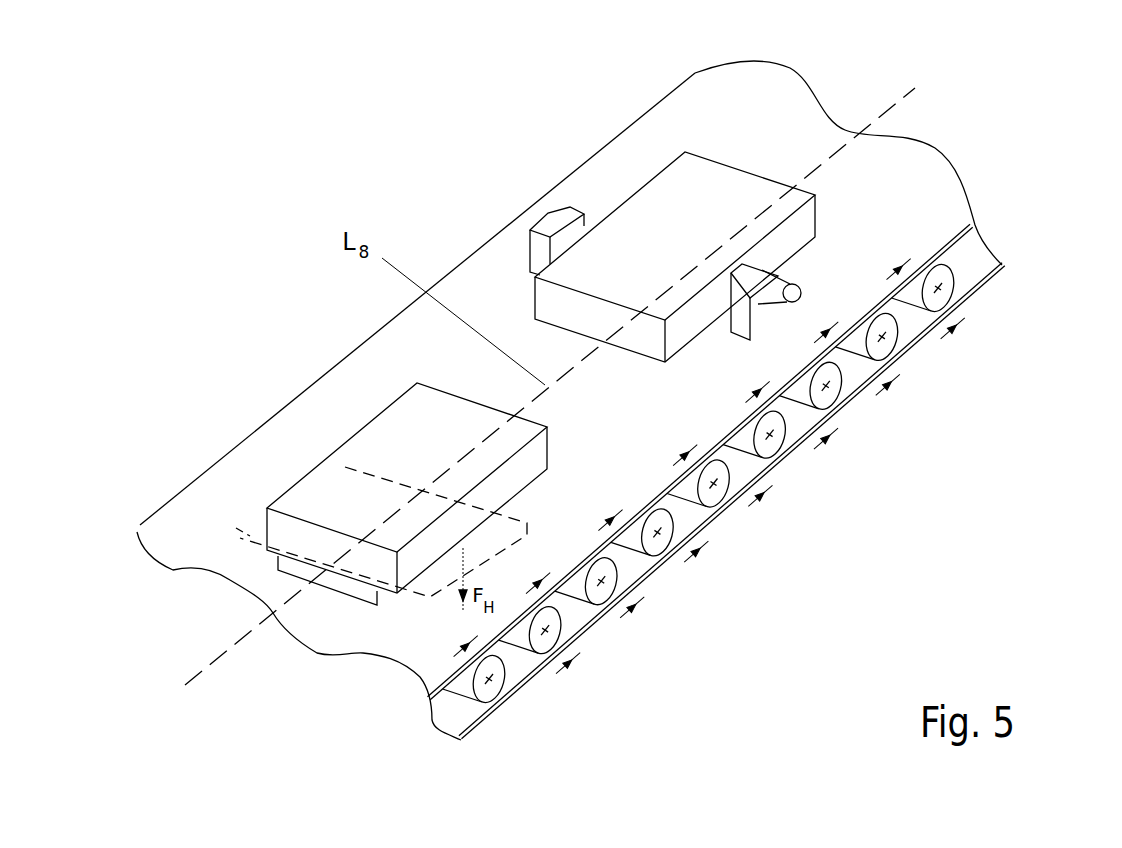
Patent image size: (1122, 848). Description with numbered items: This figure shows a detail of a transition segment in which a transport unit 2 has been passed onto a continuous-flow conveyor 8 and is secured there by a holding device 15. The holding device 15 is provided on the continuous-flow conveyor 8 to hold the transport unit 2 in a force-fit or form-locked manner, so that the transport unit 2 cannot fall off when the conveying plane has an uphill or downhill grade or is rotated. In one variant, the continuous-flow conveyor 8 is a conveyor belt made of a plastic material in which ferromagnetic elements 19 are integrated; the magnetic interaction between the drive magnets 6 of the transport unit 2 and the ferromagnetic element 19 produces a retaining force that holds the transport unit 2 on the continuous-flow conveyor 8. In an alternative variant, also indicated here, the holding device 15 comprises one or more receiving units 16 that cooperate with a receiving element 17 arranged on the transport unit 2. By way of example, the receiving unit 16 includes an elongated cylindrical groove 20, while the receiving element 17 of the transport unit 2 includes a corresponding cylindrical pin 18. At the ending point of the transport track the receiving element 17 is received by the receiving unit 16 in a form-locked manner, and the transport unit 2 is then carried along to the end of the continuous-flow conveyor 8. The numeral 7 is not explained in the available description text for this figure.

The transport unit 2 is at (612, 290).
The drive magnets 6 is at (362, 590).
The roller conveyor 7 is at (770, 645).
The continuous-flow conveyor 8 is at (555, 548).
The holding device 15 is at (247, 547).
The receiving unit 16 is at (540, 212).
The receiving element 17 is at (586, 227).
The cylindrical pin 18 is at (806, 288).
The ferromagnetic elements 19 is at (258, 527).
The cylindrical groove 20 is at (780, 307).